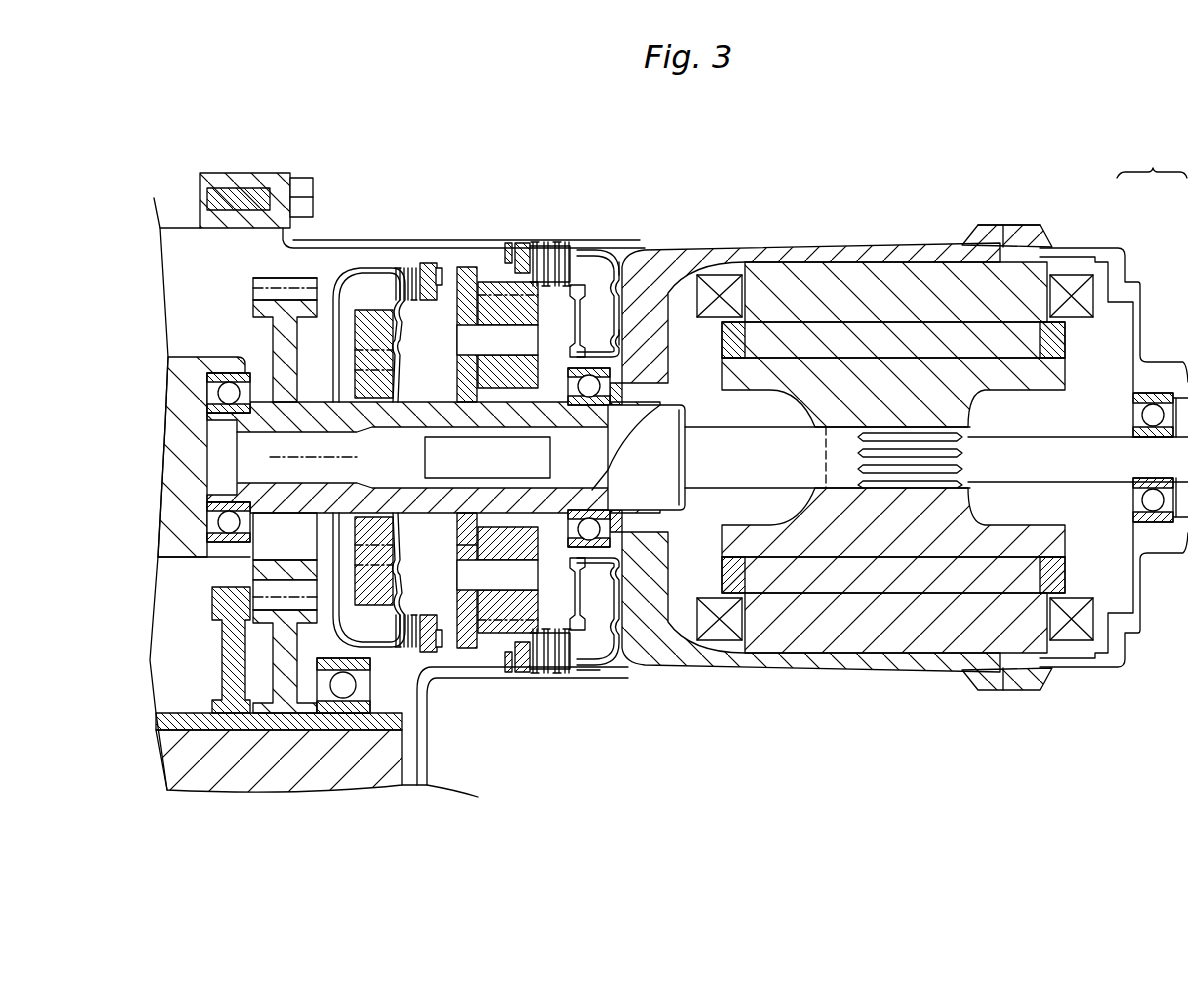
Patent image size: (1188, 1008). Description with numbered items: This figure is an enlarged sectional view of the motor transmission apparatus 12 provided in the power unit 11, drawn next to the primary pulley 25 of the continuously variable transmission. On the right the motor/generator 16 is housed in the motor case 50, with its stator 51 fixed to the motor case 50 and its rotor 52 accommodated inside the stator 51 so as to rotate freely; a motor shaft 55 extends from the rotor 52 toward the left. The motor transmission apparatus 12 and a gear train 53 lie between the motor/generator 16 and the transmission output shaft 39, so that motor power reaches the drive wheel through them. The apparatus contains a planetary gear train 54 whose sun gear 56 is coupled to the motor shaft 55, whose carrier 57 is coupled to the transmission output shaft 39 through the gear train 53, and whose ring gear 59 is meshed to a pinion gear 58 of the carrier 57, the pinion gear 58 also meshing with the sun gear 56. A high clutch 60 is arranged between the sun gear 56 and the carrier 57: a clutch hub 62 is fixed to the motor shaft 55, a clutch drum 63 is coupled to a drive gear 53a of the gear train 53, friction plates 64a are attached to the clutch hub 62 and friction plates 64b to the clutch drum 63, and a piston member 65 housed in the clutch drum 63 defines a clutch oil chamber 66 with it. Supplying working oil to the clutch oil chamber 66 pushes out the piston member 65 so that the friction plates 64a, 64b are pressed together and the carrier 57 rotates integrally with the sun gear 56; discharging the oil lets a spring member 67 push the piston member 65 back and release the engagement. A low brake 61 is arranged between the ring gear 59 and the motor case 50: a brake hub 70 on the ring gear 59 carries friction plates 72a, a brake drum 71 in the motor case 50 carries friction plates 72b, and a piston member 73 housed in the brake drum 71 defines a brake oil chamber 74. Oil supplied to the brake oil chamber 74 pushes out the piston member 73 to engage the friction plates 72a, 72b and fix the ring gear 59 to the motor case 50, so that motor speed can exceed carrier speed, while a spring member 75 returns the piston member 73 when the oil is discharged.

The power unit 11 is at (818, 208).
The motor transmission apparatus 12 is at (322, 335).
The motor/generator 16 is at (1152, 161).
The primary pulley 25 is at (182, 226).
The transmission output shaft 39 is at (196, 766).
The motor case 50 is at (941, 236).
The stator 51 is at (1014, 288).
The rotor 52 is at (1038, 370).
The gear train 53 is at (279, 258).
The drive gear 53a is at (253, 280).
The planetary gear train 54 is at (491, 652).
The motor shaft 55 is at (654, 482).
The sun gear 56 is at (528, 393).
The carrier 57 is at (465, 650).
The pinion gear 58 is at (514, 612).
The ring gear 59 is at (480, 266).
The high clutch 60 is at (408, 266).
The low brake 61 is at (553, 226).
The clutch hub 62 is at (436, 265).
The clutch drum 63 is at (368, 300).
The friction plates 64a is at (418, 266).
The friction plates 64b is at (395, 266).
The piston member 65 is at (337, 268).
The clutch oil chamber 66 is at (324, 655).
The spring member 67 is at (373, 688).
The brake hub 70 is at (518, 242).
The brake drum 71 is at (596, 250).
The friction plates 72a is at (534, 240).
The friction plates 72b is at (566, 240).
The piston member 73 is at (614, 258).
The brake oil chamber 74 is at (644, 265).
The spring member 75 is at (598, 592).